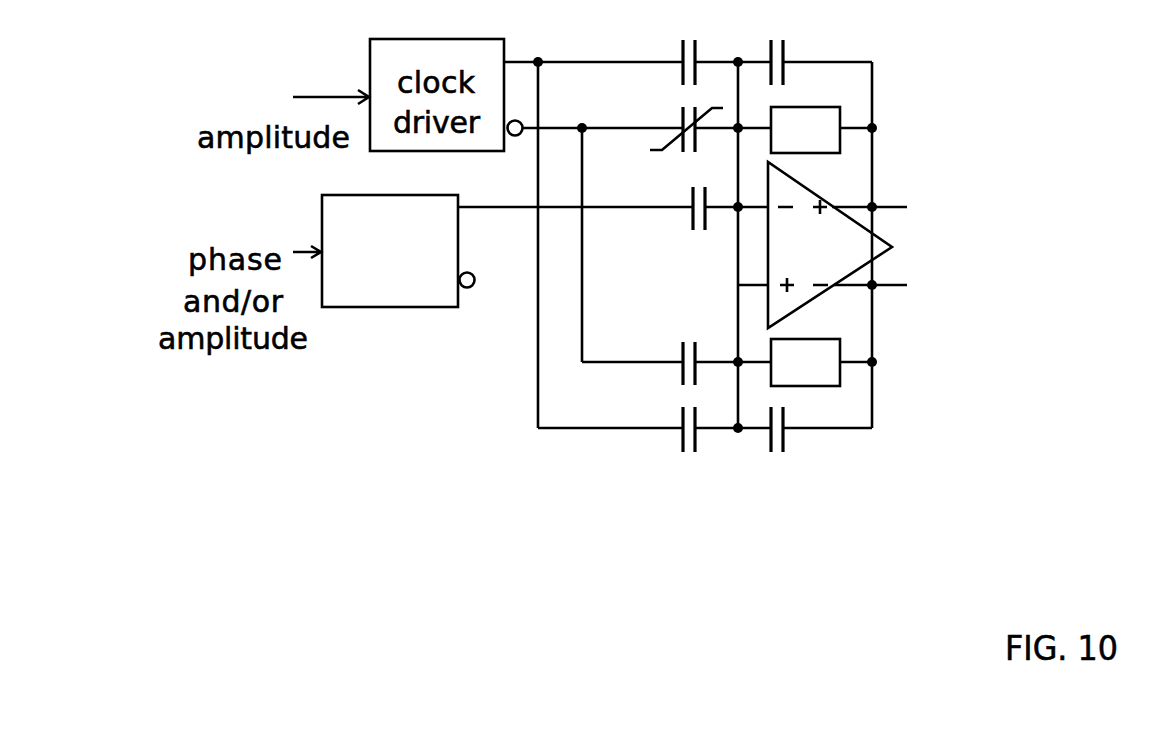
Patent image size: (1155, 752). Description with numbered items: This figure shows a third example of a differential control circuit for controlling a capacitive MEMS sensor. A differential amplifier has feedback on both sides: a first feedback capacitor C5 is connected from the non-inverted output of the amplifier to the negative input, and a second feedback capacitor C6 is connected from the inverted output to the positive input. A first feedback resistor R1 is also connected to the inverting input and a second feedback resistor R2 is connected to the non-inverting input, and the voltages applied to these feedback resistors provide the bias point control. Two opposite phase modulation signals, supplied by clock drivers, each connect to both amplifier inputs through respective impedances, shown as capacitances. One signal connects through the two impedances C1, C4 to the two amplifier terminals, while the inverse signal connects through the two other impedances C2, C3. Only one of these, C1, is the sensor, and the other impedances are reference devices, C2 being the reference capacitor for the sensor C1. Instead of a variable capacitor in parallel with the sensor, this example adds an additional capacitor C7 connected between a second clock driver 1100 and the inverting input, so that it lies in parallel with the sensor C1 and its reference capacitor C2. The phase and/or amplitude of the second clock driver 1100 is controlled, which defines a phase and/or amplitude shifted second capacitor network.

The second clock driver 1100 is at (383, 308).
The sensor C1 is at (692, 145).
The reference capacitor C2 is at (694, 44).
The impedance C3 is at (695, 451).
The impedance C4 is at (695, 344).
The first feedback capacitor C5 is at (782, 44).
The second feedback capacitor C6 is at (783, 451).
The additional capacitor C7 is at (685, 229).
The first feedback resistor R1 is at (805, 130).
The second feedback resistor R2 is at (805, 362).